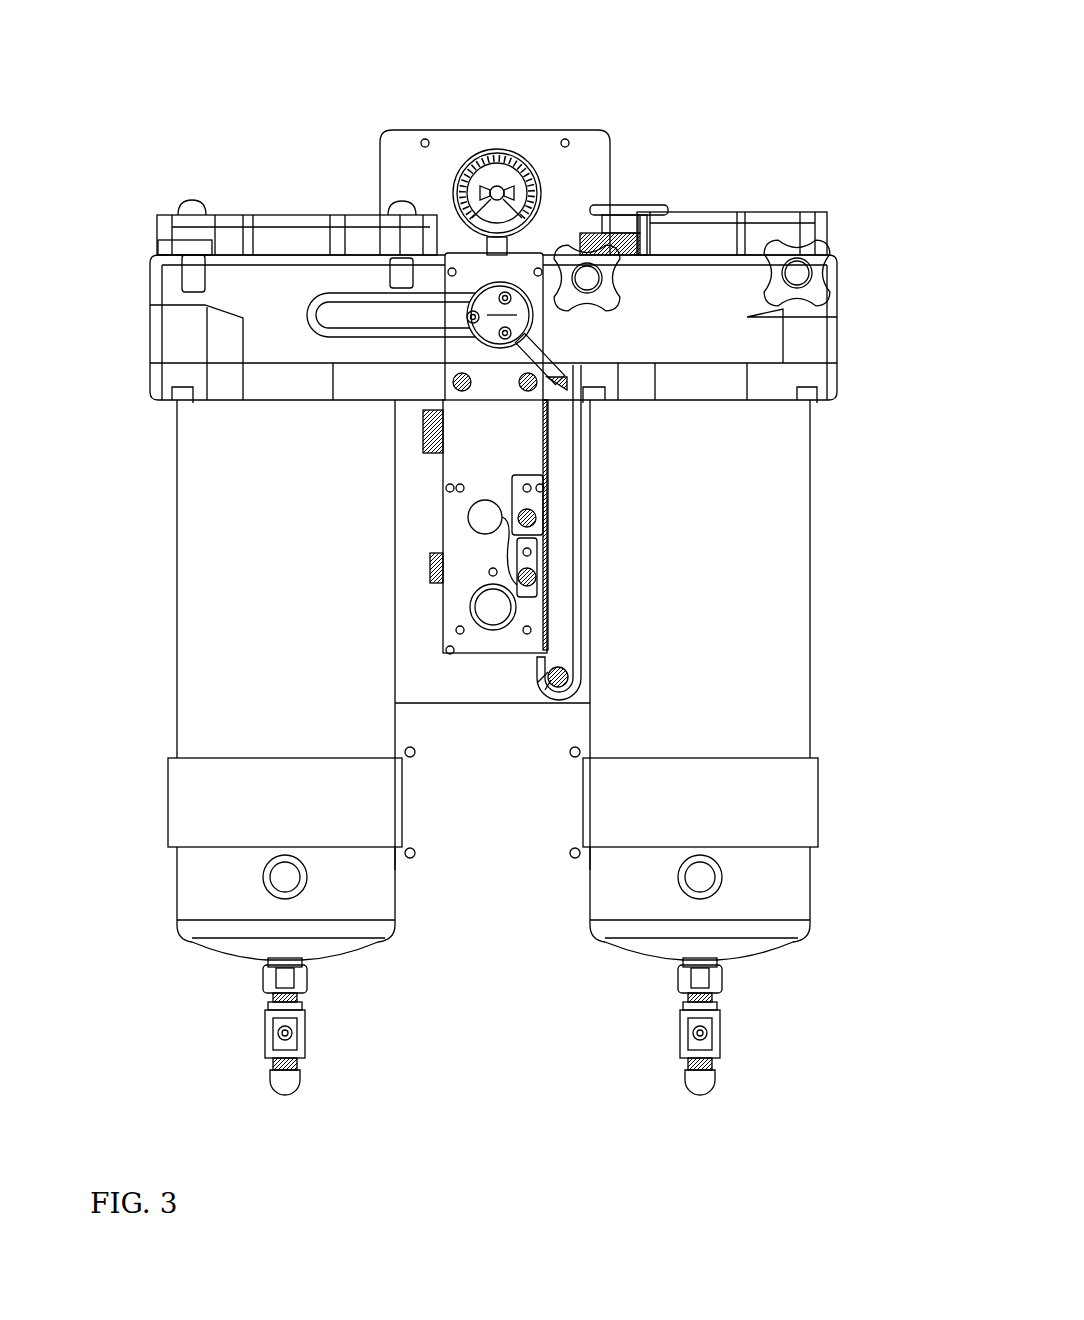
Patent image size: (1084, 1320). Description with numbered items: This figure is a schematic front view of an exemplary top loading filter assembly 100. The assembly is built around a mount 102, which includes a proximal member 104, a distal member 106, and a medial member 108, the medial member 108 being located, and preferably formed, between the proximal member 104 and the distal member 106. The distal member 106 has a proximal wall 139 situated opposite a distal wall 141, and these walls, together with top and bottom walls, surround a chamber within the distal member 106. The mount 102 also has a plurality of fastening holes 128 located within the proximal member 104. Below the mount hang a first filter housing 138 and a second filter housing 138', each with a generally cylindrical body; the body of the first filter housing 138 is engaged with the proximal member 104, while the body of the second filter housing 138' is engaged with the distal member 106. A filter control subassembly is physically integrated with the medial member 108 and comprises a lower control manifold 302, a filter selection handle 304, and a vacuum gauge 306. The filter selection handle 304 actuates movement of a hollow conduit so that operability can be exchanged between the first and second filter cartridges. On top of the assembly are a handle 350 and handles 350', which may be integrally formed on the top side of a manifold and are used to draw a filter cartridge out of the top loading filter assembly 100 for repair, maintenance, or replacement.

The top loading filter assembly 100 is at (745, 72).
The mount 102 is at (868, 253).
The proximal member 104 is at (150, 289).
The distal member 106 is at (848, 326).
The medial member 108 is at (529, 248).
The fastening holes 128 is at (398, 272).
The first filter housing 138 is at (255, 747).
The second filter housing 138' is at (745, 747).
The proximal wall 139 is at (547, 347).
The distal wall 141 is at (838, 376).
The lower control manifold 302 is at (478, 664).
The filter selection handle 304 is at (400, 322).
The vacuum gauge 306 is at (506, 152).
The handle 350 is at (297, 202).
The handles 350' is at (732, 203).